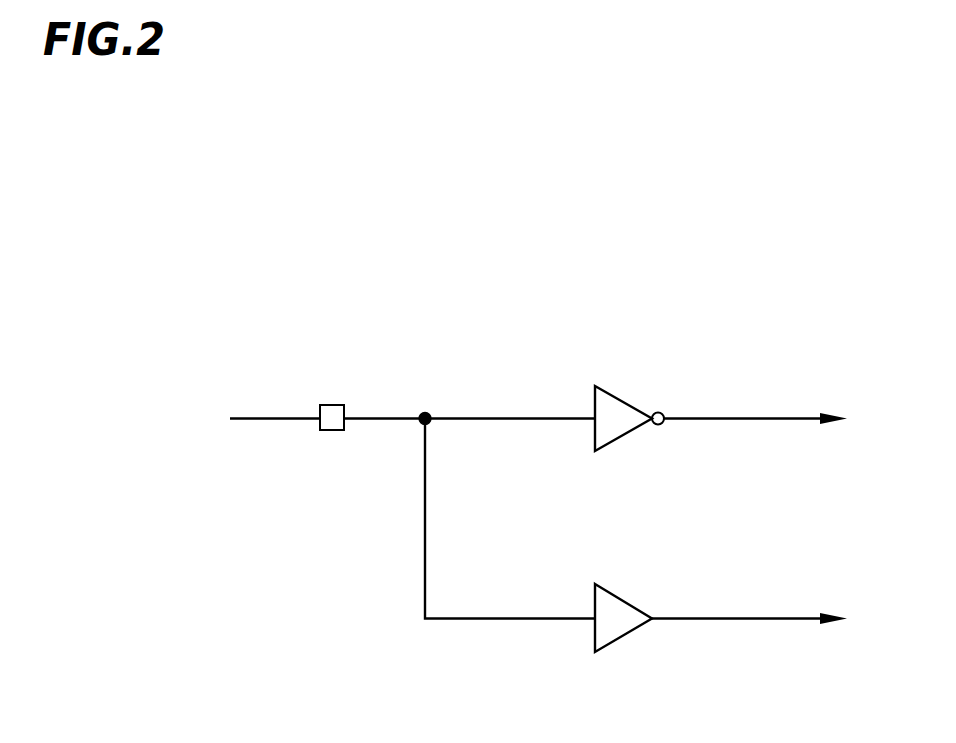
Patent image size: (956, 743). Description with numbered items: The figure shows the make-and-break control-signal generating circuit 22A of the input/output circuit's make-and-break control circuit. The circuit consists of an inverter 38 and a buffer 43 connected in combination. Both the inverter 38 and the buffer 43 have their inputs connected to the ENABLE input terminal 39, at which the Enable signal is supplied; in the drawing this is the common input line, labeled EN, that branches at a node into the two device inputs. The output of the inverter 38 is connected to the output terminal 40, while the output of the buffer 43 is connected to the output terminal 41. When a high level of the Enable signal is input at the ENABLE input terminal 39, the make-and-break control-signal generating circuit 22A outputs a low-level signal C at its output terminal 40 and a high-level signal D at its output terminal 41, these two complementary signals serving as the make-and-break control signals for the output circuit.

The make-and-break control-signal generating circuit 22A is at (357, 640).
The ENABLE input terminal 39 is at (329, 431).
The inverter 38 is at (617, 398).
The output terminal 40 is at (763, 417).
The buffer 43 is at (618, 638).
The output terminal 41 is at (758, 620).